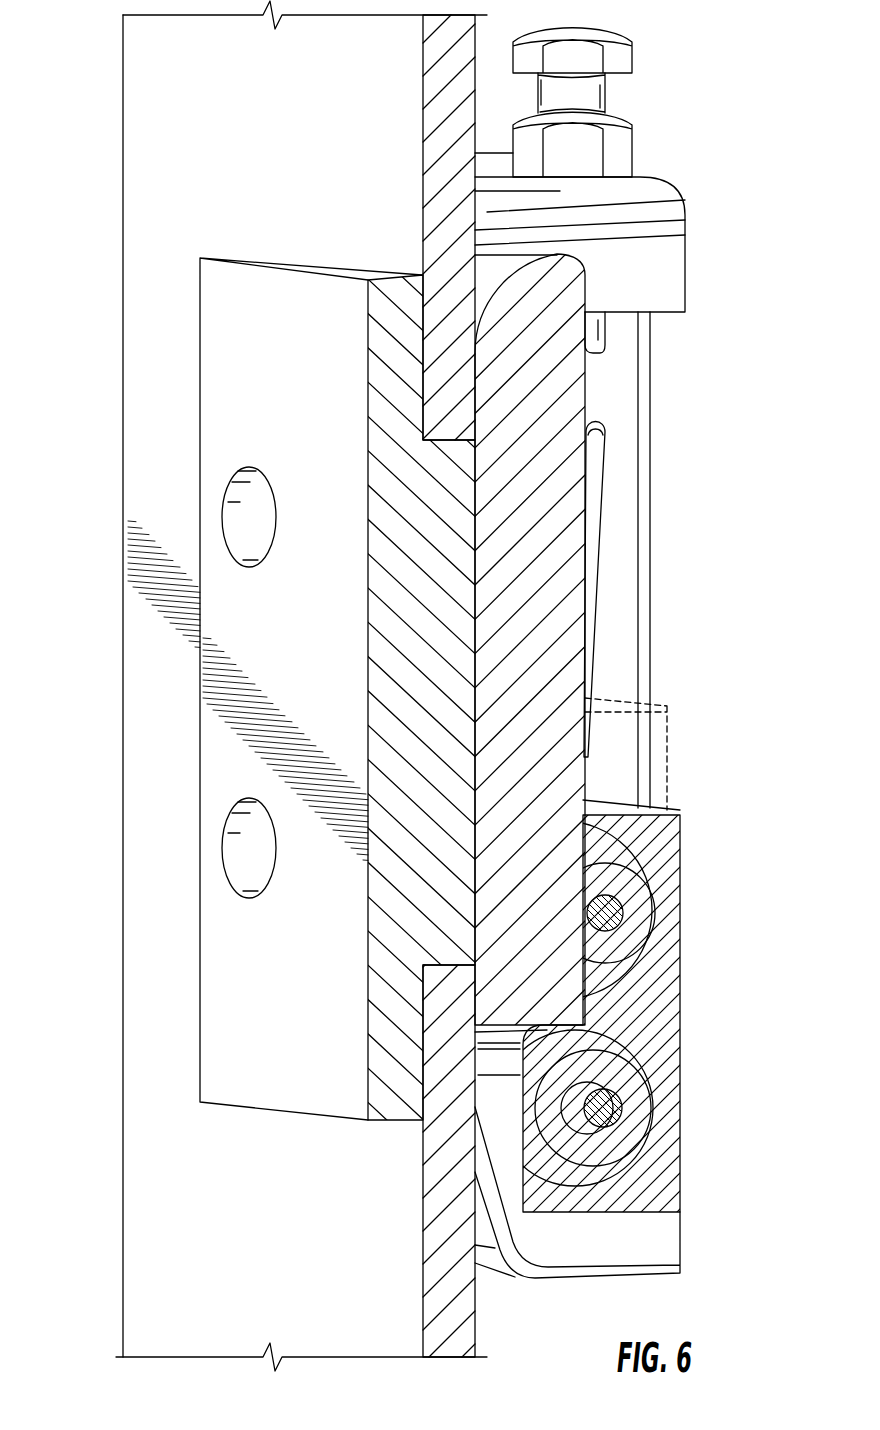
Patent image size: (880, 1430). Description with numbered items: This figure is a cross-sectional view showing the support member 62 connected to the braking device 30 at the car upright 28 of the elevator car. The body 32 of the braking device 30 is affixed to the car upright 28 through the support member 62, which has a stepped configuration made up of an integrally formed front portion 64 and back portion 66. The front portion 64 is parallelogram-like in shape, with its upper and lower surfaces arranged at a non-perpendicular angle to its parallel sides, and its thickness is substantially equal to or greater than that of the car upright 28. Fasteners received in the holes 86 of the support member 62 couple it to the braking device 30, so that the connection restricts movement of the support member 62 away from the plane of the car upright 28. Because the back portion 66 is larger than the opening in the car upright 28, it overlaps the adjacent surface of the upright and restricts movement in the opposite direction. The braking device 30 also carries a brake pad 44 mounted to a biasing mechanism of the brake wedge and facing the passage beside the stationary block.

The car upright 28 is at (165, 110).
The braking device 30 is at (732, 110).
The body 32 is at (542, 500).
The brake pad 44 is at (653, 983).
The support member 62 is at (270, 689).
The front portion 64 is at (445, 695).
The back portion 66 is at (220, 702).
The holes 86 is at (255, 517).